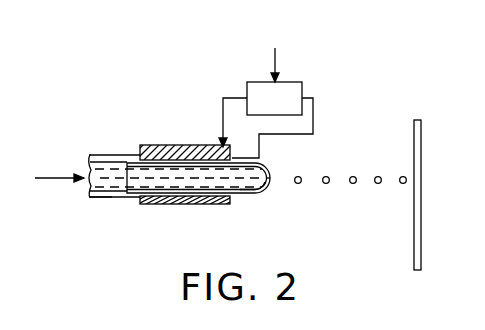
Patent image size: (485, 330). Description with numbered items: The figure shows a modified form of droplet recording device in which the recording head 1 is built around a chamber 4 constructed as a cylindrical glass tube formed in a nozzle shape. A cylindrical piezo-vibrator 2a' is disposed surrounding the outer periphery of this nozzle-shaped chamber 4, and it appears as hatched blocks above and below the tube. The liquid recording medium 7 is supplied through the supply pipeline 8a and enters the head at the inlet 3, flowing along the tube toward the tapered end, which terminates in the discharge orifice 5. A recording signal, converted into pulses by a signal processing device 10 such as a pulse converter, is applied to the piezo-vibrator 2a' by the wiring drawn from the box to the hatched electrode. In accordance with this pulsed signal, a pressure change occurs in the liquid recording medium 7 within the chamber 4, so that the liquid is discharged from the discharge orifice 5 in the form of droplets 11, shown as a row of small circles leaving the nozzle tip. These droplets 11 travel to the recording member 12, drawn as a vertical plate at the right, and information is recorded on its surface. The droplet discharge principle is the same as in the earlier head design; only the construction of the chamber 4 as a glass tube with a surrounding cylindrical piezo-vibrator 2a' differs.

The recording head 1 is at (188, 145).
The cylindrical piezo-vibrator 2a' is at (186, 225).
The inlet 3 is at (132, 163).
The chamber 4 is at (239, 194).
The discharge orifice 5 is at (280, 179).
The liquid recording medium 7 is at (106, 160).
The supply pipeline 8a is at (105, 199).
The signal processing device 10 is at (247, 84).
The droplets 11 is at (355, 177).
The recording member 12 is at (421, 228).